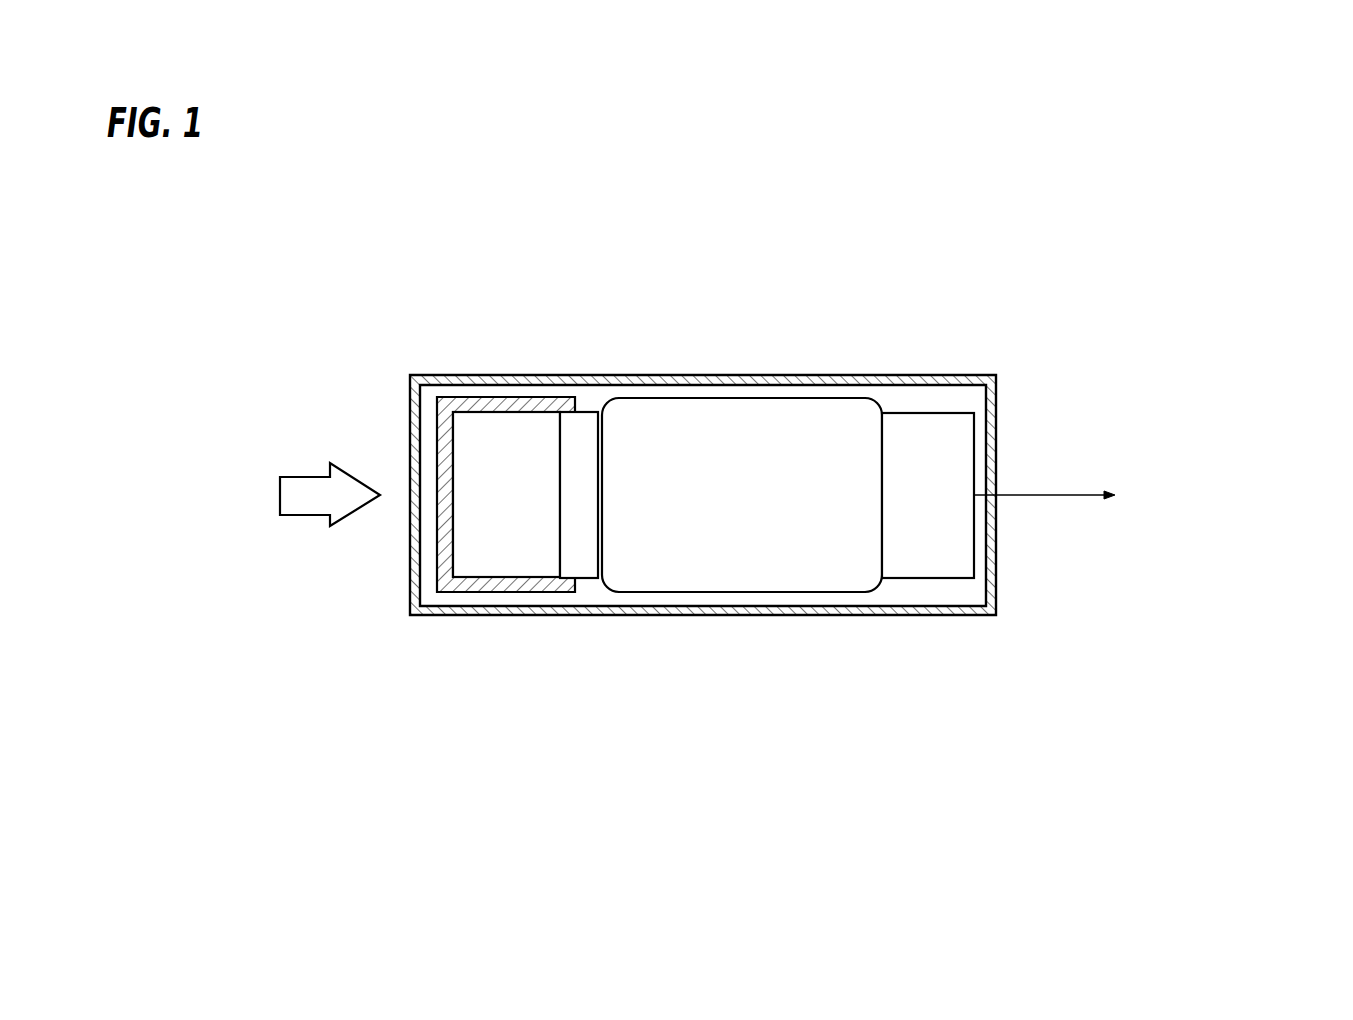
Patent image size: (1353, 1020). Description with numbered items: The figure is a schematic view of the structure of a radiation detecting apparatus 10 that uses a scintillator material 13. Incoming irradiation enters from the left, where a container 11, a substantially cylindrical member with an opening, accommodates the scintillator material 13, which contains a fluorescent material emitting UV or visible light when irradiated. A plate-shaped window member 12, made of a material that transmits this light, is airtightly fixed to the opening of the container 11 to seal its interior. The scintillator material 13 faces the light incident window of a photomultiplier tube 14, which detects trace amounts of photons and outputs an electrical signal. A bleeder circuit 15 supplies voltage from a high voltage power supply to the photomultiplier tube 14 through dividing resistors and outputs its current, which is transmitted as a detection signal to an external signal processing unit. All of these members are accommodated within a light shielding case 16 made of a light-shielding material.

The radiation detecting apparatus 10 is at (715, 762).
The container 11 is at (472, 589).
The window member 12 is at (583, 557).
The scintillator material 13 is at (500, 447).
The photomultiplier tube 14 is at (768, 565).
The bleeder circuit 15 is at (933, 433).
The light shielding case 16 is at (733, 375).